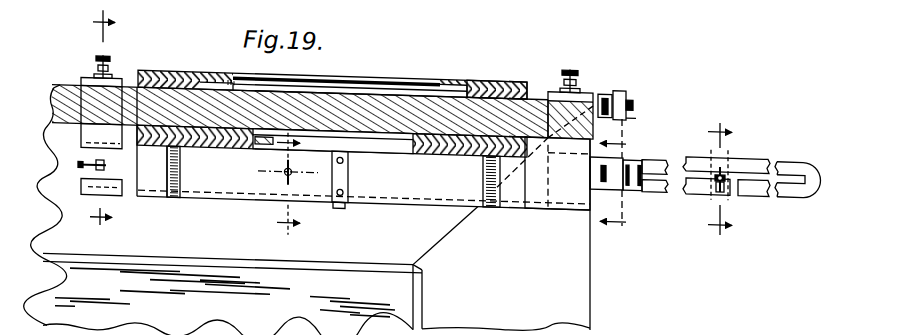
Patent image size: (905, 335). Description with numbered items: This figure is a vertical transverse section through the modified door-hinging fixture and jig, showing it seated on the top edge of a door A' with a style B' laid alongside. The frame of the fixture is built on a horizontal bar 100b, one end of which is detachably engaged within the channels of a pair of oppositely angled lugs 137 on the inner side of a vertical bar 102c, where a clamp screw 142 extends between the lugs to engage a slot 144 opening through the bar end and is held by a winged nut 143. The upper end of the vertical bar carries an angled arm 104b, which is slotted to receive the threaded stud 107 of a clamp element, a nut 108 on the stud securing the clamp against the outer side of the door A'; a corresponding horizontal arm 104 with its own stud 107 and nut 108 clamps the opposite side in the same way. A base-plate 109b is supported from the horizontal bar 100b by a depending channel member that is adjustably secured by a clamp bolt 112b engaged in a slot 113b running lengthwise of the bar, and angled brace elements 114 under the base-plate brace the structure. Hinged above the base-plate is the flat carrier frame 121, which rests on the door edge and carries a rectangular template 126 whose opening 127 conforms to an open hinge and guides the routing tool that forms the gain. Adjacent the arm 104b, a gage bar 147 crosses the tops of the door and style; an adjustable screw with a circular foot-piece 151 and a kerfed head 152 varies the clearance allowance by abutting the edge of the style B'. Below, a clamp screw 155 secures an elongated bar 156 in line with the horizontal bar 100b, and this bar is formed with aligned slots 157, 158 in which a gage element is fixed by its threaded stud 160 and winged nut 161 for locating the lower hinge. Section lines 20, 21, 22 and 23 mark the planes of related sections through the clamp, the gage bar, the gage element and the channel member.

The section line 20- 20 is at (102, 121).
The section line 21- 21 is at (625, 175).
The section line 22- 22 is at (720, 178).
The section line 23- 23 is at (280, 183).
The horizontal arm 104 is at (90, 75).
The angled arm 104b is at (557, 83).
The threaded stud 107 is at (99, 57).
The nut 108 is at (109, 58).
The carrier frame 121 is at (178, 66).
The template opening 127 is at (339, 68).
The style B' is at (300, 89).
The template 126 is at (454, 64).
The circular foot-piece 151 is at (601, 76).
The gage bar 147 is at (618, 72).
The kerfed head 152 is at (632, 81).
The vertical bar 102c is at (636, 97).
The angled lugs 137 is at (92, 133).
The clamp screw 142 is at (97, 160).
The slot 144 is at (95, 165).
The winged nut 143 is at (82, 181).
The horizontal bar 100b is at (131, 188).
The angled brace elements 114 is at (174, 193).
The slot 113b is at (260, 164).
The clamp bolt 112b is at (331, 190).
The base-plate 109b is at (463, 143).
The clamp screw 155 is at (600, 159).
The elongated bar 156 is at (668, 139).
The slot 157 is at (688, 166).
The threaded stud 160 is at (716, 164).
The winged nut 161 is at (722, 148).
The slot 158 is at (790, 195).
The door A' is at (599, 235).